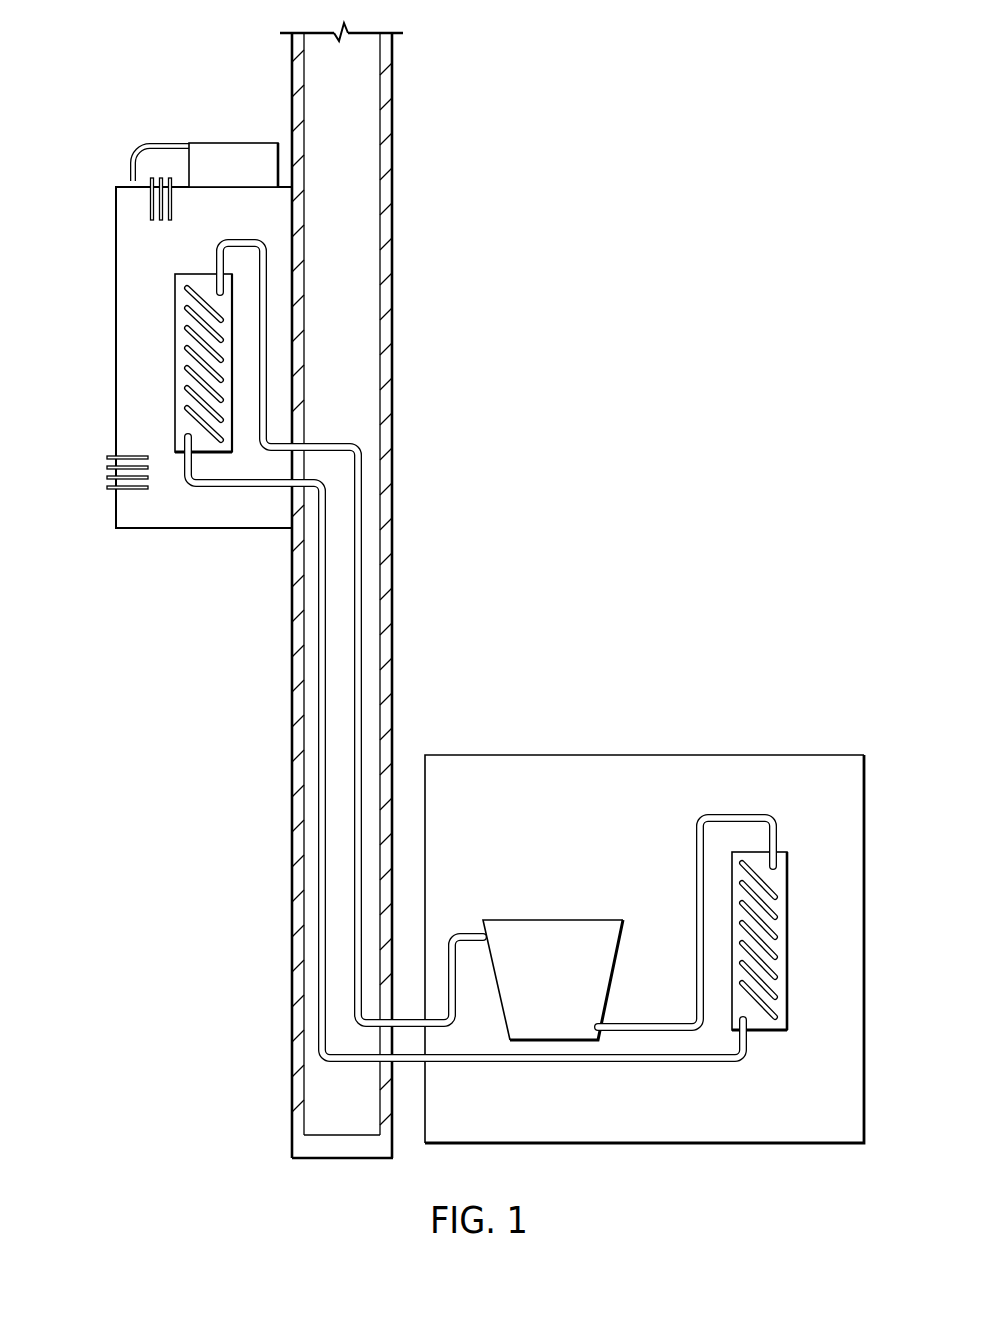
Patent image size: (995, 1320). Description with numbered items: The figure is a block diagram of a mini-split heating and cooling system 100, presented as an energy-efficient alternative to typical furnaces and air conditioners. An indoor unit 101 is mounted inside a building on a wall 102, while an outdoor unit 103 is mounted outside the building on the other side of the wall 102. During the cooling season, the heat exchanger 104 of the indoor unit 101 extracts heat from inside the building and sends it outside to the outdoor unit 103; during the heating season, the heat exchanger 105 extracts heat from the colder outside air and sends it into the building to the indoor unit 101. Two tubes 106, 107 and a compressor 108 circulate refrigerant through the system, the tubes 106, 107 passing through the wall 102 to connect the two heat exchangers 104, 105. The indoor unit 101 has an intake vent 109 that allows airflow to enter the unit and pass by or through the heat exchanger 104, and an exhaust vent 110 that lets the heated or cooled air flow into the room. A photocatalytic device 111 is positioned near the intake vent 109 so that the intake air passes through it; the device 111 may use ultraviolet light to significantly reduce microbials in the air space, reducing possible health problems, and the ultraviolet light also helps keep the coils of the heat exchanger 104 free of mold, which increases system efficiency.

The mini-split heating and cooling system 100 is at (630, 186).
The indoor unit 101 is at (203, 532).
The wall 102 is at (395, 150).
The outdoor unit 103 is at (637, 753).
The heat exchanger 104 is at (175, 363).
The heat exchanger 105 is at (788, 927).
The tube 106 is at (352, 1068).
The tube 107 is at (330, 442).
The compressor 108 is at (553, 918).
The intake vent 109 is at (150, 211).
The exhaust vent 110 is at (128, 453).
The photocatalytic device 111 is at (232, 142).